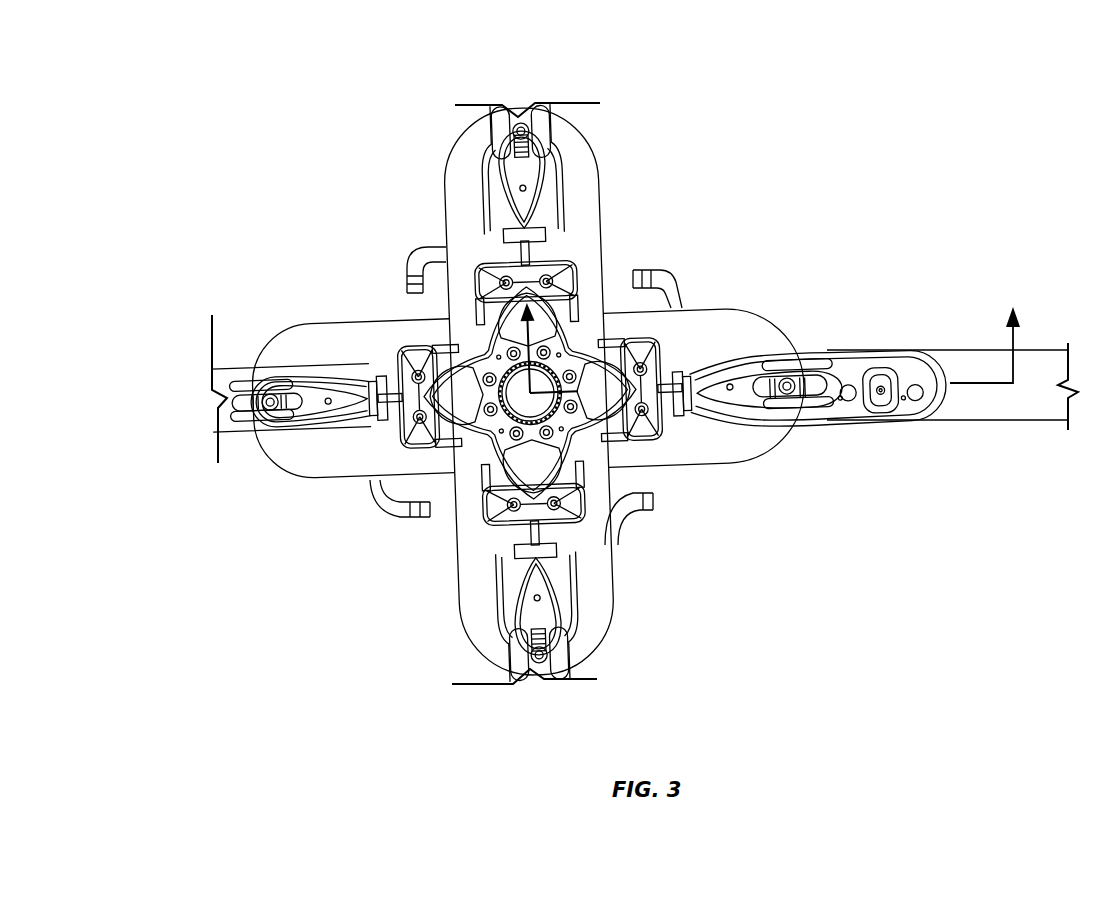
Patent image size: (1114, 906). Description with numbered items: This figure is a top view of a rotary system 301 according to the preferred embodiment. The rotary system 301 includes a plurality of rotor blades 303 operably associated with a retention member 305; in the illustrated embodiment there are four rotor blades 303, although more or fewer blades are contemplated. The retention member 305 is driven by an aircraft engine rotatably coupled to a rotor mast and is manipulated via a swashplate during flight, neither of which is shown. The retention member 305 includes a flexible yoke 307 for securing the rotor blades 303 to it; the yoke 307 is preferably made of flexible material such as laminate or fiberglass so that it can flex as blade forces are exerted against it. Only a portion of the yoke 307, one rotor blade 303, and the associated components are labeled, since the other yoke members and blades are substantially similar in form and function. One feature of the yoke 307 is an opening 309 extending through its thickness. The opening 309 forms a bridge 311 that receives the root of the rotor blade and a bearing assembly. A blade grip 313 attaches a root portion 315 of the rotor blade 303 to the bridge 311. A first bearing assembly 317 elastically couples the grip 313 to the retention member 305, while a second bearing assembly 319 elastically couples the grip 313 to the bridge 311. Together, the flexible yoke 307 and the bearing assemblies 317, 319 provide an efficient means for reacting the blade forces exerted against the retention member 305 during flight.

The rotary system 301 is at (250, 82).
The rotor blade 303 is at (1010, 426).
The retention member 305 is at (622, 447).
The flexible yoke 307 is at (762, 311).
The opening 309 is at (716, 425).
The bridge 311 is at (865, 409).
The blade grip 313 is at (884, 352).
The root portion 315 is at (947, 422).
The first bearing assembly 317 is at (666, 341).
The second bearing assembly 319 is at (811, 405).